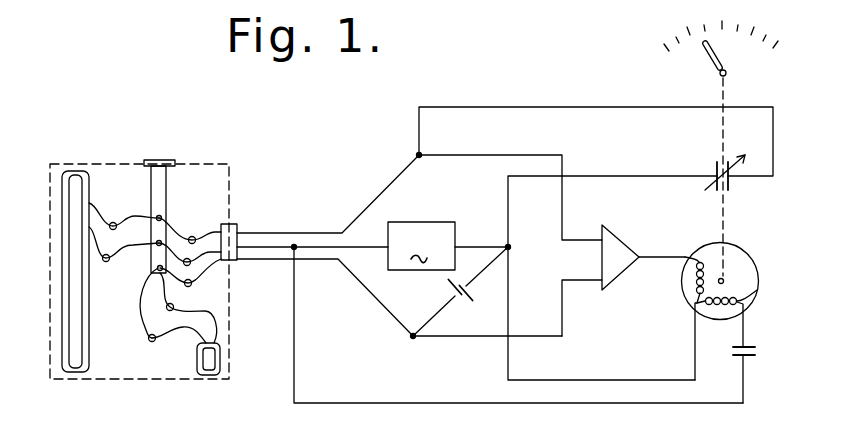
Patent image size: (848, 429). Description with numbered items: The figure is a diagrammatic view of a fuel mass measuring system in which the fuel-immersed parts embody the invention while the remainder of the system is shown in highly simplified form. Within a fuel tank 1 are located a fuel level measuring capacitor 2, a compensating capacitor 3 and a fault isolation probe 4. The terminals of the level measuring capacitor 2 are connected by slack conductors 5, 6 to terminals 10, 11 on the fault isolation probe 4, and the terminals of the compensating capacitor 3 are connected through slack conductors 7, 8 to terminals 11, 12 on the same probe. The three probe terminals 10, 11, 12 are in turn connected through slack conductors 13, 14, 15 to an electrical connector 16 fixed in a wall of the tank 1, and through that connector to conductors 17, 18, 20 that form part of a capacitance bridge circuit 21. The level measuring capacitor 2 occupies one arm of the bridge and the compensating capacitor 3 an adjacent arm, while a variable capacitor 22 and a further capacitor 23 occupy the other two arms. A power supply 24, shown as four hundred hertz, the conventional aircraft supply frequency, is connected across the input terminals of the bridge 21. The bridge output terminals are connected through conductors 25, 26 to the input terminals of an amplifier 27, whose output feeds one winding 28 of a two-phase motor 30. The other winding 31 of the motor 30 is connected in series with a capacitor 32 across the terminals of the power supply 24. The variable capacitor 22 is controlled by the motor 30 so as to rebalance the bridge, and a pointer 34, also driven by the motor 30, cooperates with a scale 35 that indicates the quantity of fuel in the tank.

The fuel tank 1 is at (50, 262).
The fuel level measuring capacitor 2 is at (70, 322).
The compensating capacitor 3 is at (221, 360).
The fault isolation probe 4 is at (166, 177).
The slack conductor 5 is at (132, 217).
The slack conductor 6 is at (125, 259).
The slack conductor 7 is at (213, 312).
The slack conductor 8 is at (205, 338).
The terminal 10 is at (162, 215).
The terminal 11 is at (163, 236).
The terminal 12 is at (145, 270).
The slack conductor 13 is at (209, 226).
The slack conductor 14 is at (229, 224).
The slack conductor 15 is at (219, 264).
The electrical connector 16 is at (232, 236).
The conductor 17 is at (295, 232).
The conductor 18 is at (280, 252).
The conductor 20 is at (305, 261).
The capacitance bridge circuit 21 is at (428, 298).
The variable capacitor 22 is at (717, 162).
The capacitor 23 is at (465, 299).
The power supply 24 is at (403, 221).
The conductor 25 is at (562, 199).
The conductor 26 is at (562, 313).
The amplifier 27 is at (622, 238).
The winding 28 is at (687, 288).
The two-phase motor 30 is at (757, 255).
The winding 31 is at (757, 290).
The capacitor 32 is at (756, 351).
The pointer 34 is at (716, 67).
The scale 35 is at (642, 42).